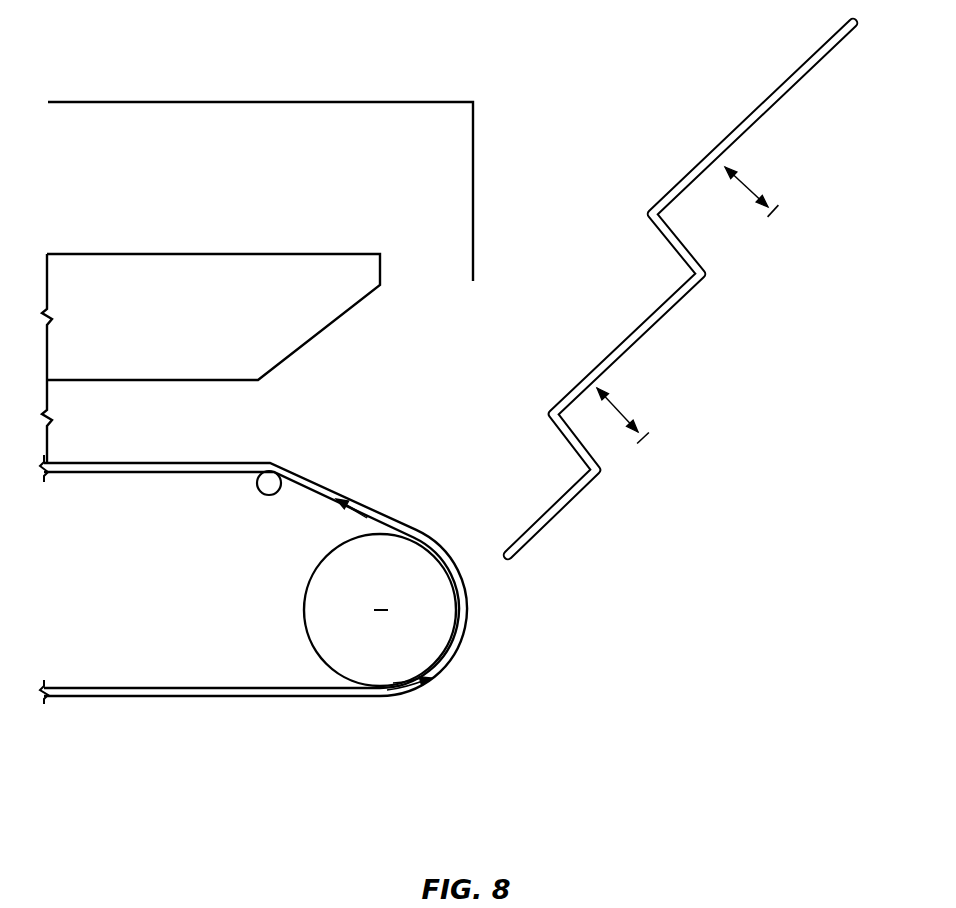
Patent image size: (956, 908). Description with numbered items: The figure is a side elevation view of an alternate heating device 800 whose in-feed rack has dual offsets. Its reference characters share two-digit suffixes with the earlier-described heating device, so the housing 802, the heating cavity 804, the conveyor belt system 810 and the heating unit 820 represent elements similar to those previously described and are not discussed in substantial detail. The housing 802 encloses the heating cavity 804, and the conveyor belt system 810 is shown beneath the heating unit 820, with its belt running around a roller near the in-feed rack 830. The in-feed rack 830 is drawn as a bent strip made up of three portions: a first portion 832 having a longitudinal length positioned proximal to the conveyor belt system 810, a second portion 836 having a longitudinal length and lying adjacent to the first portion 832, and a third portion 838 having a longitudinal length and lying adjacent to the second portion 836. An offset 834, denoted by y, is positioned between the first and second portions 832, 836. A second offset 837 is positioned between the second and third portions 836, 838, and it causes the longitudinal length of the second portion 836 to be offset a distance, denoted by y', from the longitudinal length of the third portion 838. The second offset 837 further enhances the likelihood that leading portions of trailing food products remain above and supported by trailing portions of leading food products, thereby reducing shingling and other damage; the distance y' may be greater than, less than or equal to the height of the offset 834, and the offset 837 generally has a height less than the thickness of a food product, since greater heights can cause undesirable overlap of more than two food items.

The alternate heating device 800 is at (277, 616).
The housing 802 is at (266, 101).
The heating cavity 804 is at (265, 415).
The conveyor belt system 810 is at (247, 700).
The heating unit 820 is at (233, 254).
The in-feed rack 830 is at (653, 310).
The first portion 832 is at (580, 507).
The offset 834 is at (597, 450).
The second portion 836 is at (680, 308).
The second offset 837 is at (697, 248).
The third portion 838 is at (757, 96).